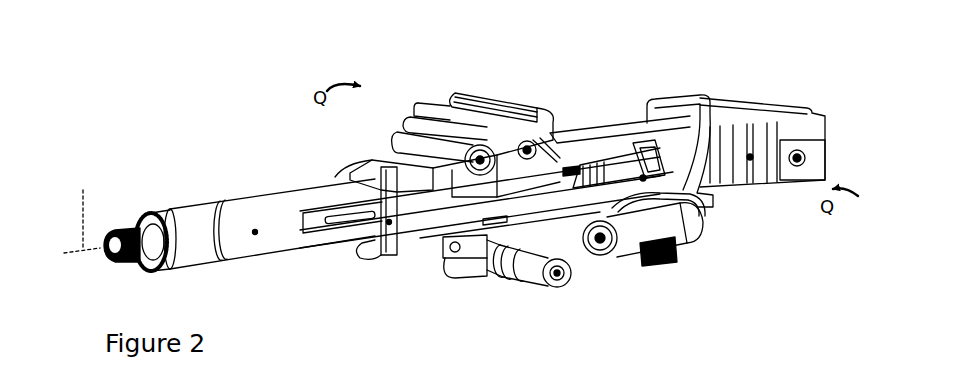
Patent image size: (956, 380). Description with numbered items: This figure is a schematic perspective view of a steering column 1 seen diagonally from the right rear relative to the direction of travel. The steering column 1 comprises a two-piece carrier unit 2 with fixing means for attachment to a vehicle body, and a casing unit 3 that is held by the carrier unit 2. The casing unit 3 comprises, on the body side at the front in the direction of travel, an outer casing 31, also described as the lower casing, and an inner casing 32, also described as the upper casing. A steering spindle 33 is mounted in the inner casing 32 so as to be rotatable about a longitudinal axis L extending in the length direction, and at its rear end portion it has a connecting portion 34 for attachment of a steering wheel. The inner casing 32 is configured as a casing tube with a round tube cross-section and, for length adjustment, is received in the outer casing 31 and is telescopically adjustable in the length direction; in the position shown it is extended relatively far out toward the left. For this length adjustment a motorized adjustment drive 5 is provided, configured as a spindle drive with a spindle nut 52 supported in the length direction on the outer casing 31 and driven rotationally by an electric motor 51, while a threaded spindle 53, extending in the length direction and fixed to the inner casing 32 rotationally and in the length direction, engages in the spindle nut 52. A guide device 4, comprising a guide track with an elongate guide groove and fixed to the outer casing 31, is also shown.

The steering column 1 is at (620, 44).
The carrier unit 2 is at (480, 95).
The casing unit 3 is at (545, 92).
The outer casing 31 is at (574, 122).
The inner casing 32 is at (281, 240).
The steering spindle 33 is at (150, 270).
The connecting portion 34 is at (131, 232).
The guide device 4 is at (390, 258).
The adjustment drive 5 is at (606, 252).
The electric motor 51 is at (630, 243).
The spindle nut 52 is at (702, 220).
The threaded spindle 53 is at (573, 232).
The longitudinal axis L is at (82, 213).